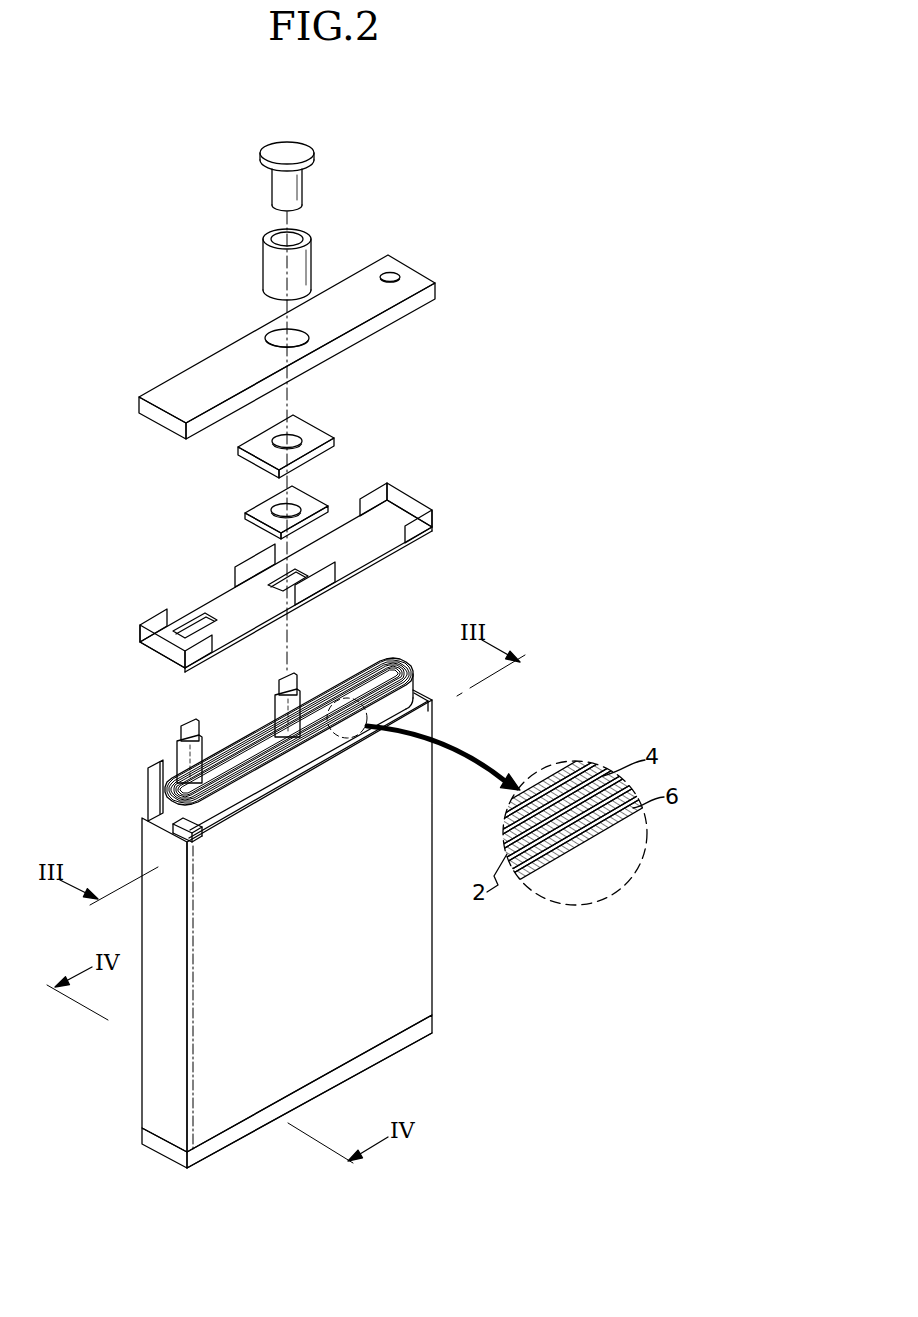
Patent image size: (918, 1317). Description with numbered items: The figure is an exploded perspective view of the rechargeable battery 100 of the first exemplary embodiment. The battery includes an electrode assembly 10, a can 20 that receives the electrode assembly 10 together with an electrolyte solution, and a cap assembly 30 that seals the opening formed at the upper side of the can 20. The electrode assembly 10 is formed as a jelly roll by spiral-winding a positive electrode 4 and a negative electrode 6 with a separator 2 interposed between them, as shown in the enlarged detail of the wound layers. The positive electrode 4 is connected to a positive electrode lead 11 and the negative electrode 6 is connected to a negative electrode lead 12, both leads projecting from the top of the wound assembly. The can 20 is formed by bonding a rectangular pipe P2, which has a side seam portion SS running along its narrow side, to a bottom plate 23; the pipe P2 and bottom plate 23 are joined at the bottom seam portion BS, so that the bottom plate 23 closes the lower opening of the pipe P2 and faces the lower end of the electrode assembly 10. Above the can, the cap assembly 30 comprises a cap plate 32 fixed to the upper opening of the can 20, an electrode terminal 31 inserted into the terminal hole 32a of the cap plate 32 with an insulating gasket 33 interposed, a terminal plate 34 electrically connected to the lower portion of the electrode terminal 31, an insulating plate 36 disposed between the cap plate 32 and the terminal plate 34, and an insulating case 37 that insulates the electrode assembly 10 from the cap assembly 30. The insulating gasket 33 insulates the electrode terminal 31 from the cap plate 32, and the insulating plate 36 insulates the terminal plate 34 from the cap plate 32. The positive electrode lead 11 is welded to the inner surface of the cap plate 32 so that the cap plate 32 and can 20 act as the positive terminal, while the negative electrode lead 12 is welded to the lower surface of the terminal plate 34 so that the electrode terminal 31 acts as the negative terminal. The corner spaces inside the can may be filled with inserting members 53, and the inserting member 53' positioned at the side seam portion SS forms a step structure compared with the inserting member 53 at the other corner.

The rechargeable battery 100 is at (123, 194).
The electrode assembly 10 is at (411, 654).
The positive electrode lead 11 is at (180, 722).
The negative electrode lead 12 is at (300, 678).
The separator 2 is at (507, 854).
The positive electrode 4 is at (603, 776).
The negative electrode 6 is at (633, 808).
The can 20 is at (53, 1101).
The pipe P2 is at (127, 1110).
The bottom plate 23 is at (217, 1148).
The side seam portion SS is at (190, 1060).
The bottom seam portion BS is at (250, 1128).
The inserting member 53 is at (123, 781).
The inserting member 53' is at (139, 815).
The cap assembly 30 is at (442, 398).
The electrode terminal 31 is at (300, 152).
The cap plate 32 is at (172, 388).
The terminal hole 32a is at (270, 336).
The insulating gasket 33 is at (272, 266).
The terminal plate 34 is at (312, 494).
The insulating plate 36 is at (314, 432).
The insulating case 37 is at (398, 520).